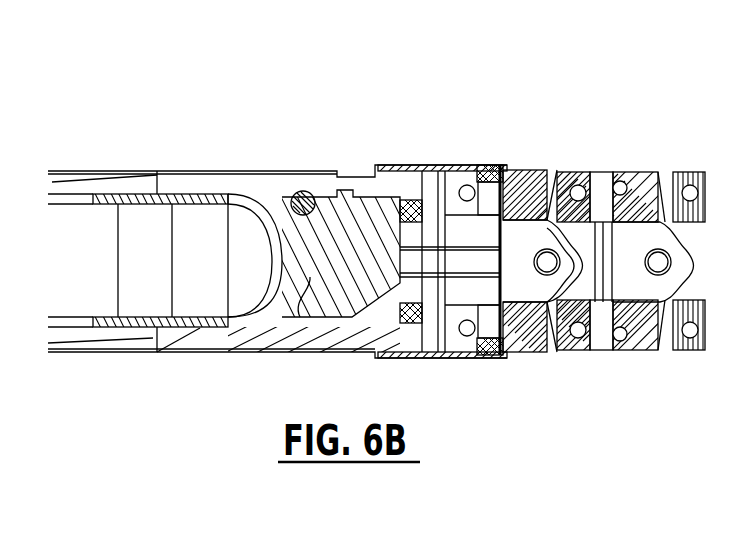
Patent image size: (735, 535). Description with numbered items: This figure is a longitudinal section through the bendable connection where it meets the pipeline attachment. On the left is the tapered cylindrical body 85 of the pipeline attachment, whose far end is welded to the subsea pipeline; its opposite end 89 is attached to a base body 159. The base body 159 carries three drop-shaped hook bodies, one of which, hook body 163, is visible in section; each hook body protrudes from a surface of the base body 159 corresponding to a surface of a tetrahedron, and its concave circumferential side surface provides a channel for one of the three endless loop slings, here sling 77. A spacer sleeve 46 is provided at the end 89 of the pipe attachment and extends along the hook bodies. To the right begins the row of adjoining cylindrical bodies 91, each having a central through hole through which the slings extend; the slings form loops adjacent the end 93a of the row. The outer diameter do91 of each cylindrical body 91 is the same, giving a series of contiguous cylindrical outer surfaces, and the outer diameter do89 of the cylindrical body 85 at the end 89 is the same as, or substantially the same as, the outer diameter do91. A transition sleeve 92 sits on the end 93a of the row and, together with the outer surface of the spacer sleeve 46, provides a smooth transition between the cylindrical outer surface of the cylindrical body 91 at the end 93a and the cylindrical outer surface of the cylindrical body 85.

The end 89 is at (97, 112).
The outer diameter do89 is at (137, 405).
The sling 77 is at (300, 198).
The hook body 163 is at (330, 212).
The transition sleeve 92 is at (428, 165).
The cylindrical body 91 is at (560, 178).
The outer diameter do91 is at (572, 118).
The cylindrical body 85 is at (73, 341).
The spacer sleeve 46 is at (218, 342).
The base body 159 is at (305, 318).
The end of the row 93a is at (518, 402).